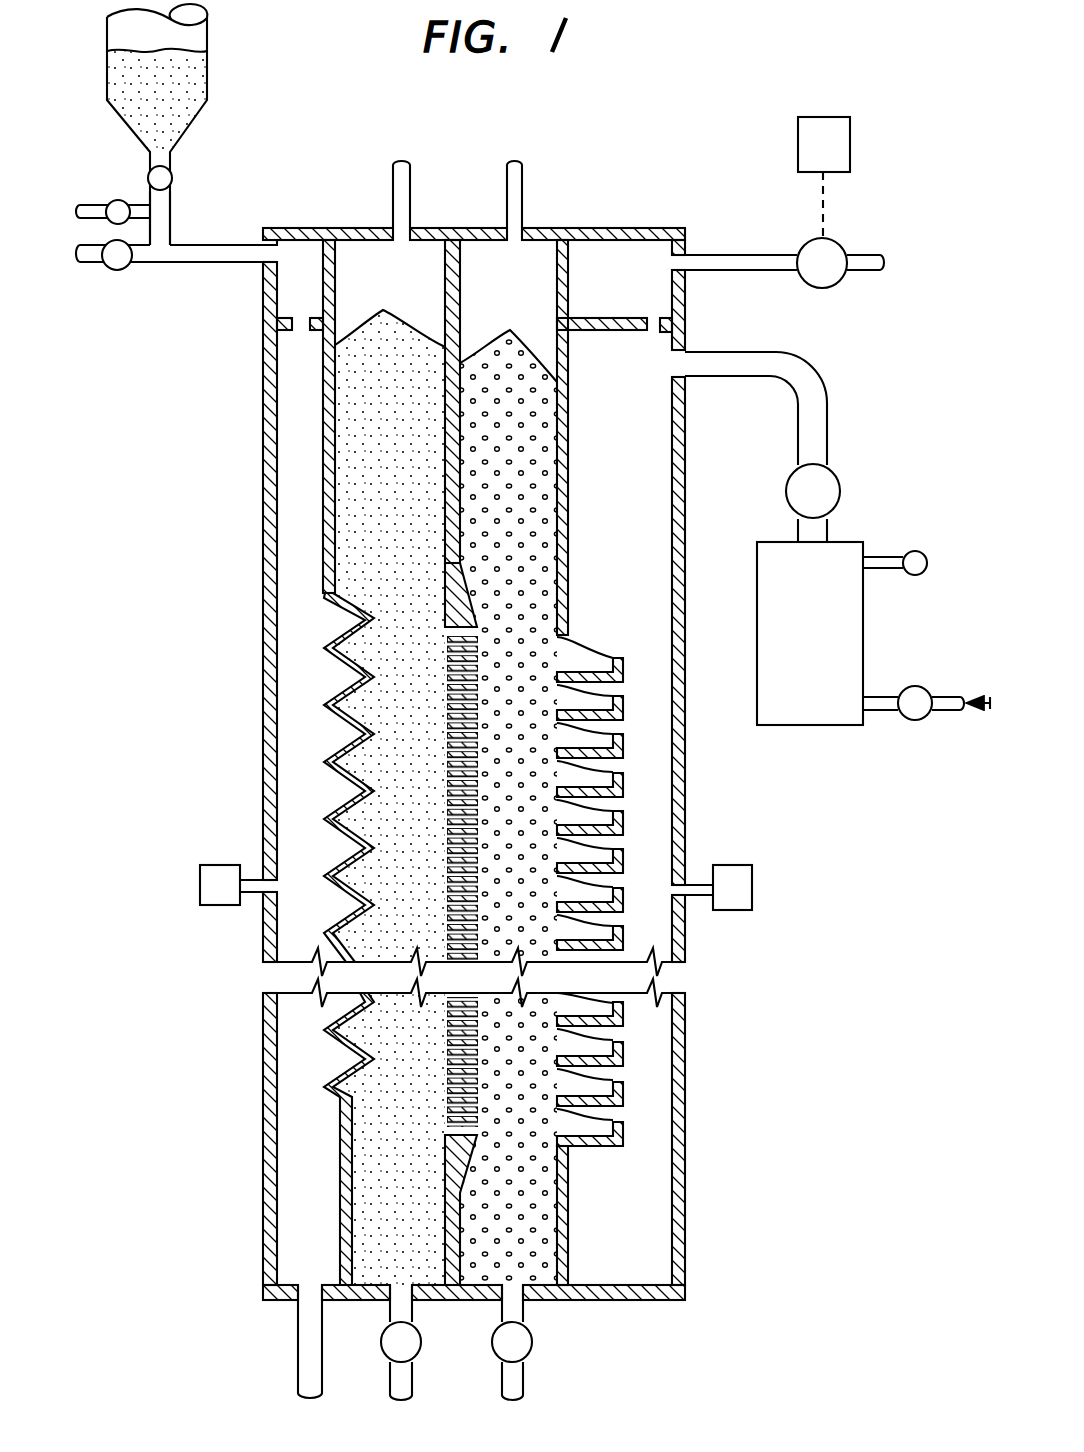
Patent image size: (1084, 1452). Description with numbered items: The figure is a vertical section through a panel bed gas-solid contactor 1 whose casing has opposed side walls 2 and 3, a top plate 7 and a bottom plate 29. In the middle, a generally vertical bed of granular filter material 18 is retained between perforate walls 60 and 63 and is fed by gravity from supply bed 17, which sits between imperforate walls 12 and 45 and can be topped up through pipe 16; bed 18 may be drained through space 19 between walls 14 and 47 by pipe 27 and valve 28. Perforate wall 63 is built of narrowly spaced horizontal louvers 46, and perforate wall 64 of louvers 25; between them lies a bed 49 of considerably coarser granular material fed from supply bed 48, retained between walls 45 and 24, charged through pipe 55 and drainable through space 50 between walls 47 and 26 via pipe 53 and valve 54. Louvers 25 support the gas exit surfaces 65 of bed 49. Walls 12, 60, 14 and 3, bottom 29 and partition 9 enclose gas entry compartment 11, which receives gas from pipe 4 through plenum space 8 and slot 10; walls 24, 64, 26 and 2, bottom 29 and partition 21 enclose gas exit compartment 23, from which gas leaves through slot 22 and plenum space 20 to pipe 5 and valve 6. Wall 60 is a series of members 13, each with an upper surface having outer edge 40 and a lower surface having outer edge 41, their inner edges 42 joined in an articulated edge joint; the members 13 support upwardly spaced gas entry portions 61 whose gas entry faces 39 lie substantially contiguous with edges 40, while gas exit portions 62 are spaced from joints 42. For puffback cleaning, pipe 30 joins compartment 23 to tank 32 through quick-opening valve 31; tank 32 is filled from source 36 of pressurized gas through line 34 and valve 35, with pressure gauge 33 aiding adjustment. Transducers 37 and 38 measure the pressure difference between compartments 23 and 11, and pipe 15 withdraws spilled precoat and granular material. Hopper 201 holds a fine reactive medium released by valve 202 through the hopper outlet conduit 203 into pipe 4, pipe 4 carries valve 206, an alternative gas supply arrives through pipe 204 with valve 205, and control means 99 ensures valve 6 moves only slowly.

The panel bed gas-solid contactor 1 is at (255, 693).
The side wall 2 is at (688, 440).
The side wall 3 is at (263, 578).
The pipe 4 is at (266, 245).
The pipe 5 is at (736, 255).
The valve 6 is at (840, 250).
The top plate 7 is at (330, 228).
The plenum space 8 is at (306, 288).
The partition 9 is at (285, 331).
The slot 10 is at (312, 332).
The gas entry compartment 11 is at (316, 457).
The imperforate wall 12 is at (323, 410).
The member 13 is at (332, 662).
The wall 14 is at (340, 1236).
The pipe 15 is at (298, 1345).
The pipe 16 is at (393, 180).
The supply bed 17 is at (398, 477).
The bed of granular filter material 18 is at (421, 825).
The space 19 is at (409, 1245).
The plenum space 20 is at (629, 287).
The partition 21 is at (603, 331).
The slot 22 is at (660, 338).
The gas exit compartment 23 is at (636, 515).
The imperforate wall 24 is at (568, 452).
The louvers or slats 25 is at (625, 705).
The wall 26 is at (568, 1181).
The pipe 27 is at (414, 1305).
The valve 28 is at (421, 1350).
The bottom plate 29 is at (352, 1300).
The pipe 30 is at (738, 352).
The quick-opening valve 31 is at (840, 485).
The tank 32 is at (863, 626).
The pressure gauge 33 is at (921, 552).
The line 34 is at (870, 726).
The valve 35 is at (928, 688).
The source of gas under pressure 36 is at (985, 712).
The transducer 37 is at (220, 865).
The transducer 38 is at (738, 865).
The gas entry face 39 is at (338, 868).
The outer edge 40 is at (330, 764).
The outer edge 41 is at (331, 782).
The inner edge 42 is at (380, 788).
The imperforate wall 45 is at (460, 486).
The louvers or slats 46 is at (479, 746).
The wall 47 is at (445, 1182).
The supply bed 48 is at (523, 560).
The granular material bed 49 is at (529, 815).
The space 50 is at (523, 1200).
The pipe 53 is at (525, 1305).
The valve 54 is at (532, 1355).
The pipe 55 is at (507, 180).
The perforate wall 60 is at (347, 899).
The gas entry portion 61 is at (336, 834).
The gas exit portions 62 is at (429, 905).
The perforate wall 63 is at (481, 890).
The perforate wall 64 is at (630, 910).
The gas exit surface 65 is at (618, 776).
The control means 99 is at (798, 150).
The hopper 201 is at (207, 36).
The valve 202 is at (172, 176).
The feed conduit 203 is at (170, 215).
The pipe 204 is at (108, 200).
The valve 205 is at (122, 240).
The valve 206 is at (125, 268).